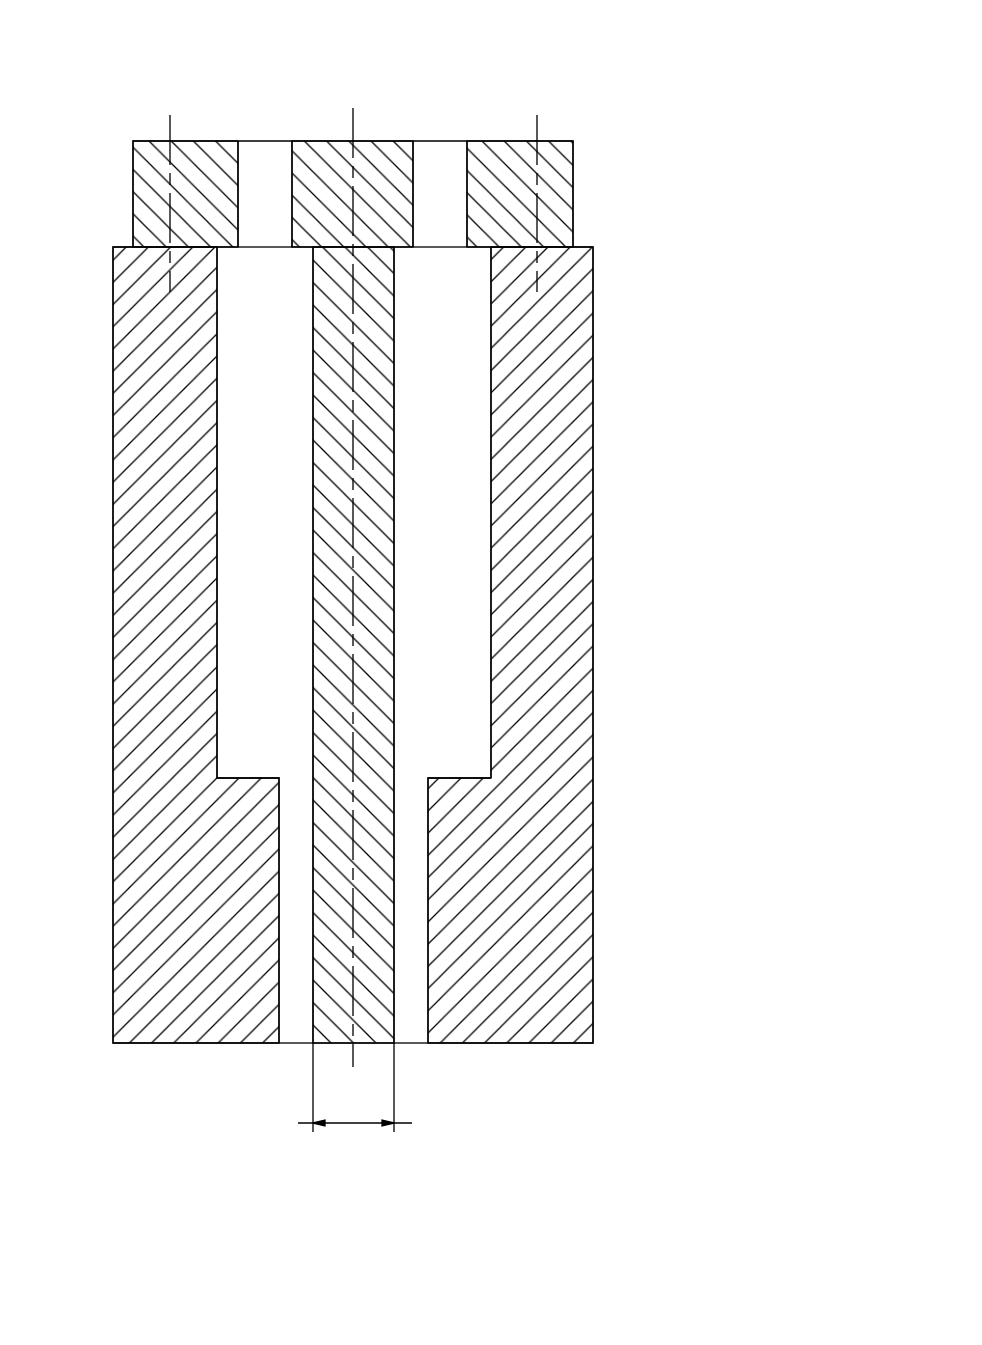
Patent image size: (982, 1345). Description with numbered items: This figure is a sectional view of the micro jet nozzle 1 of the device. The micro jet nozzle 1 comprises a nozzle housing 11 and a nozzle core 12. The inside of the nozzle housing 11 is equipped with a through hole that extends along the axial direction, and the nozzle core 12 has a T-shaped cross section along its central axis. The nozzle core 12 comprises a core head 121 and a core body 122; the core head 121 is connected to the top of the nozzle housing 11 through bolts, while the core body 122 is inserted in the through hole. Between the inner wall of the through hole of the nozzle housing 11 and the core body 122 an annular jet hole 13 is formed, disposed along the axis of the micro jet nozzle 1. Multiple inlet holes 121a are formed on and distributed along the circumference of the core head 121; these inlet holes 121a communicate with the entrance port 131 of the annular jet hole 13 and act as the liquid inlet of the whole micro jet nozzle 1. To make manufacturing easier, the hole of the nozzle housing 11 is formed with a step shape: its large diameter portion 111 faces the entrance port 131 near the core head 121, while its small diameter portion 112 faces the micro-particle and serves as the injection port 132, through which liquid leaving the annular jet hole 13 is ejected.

The micro jet nozzle 1 is at (620, 478).
The nozzle housing 11 is at (535, 933).
The large diameter portion 111 is at (215, 432).
The small diameter portion 112 is at (277, 907).
The nozzle core 12 is at (395, 602).
The core head 121 is at (557, 165).
The inlet holes 121a is at (272, 163).
The core body 122 is at (372, 373).
The annular jet hole 13 is at (277, 542).
The entrance port 131 is at (272, 250).
The injection port 132 is at (298, 1018).